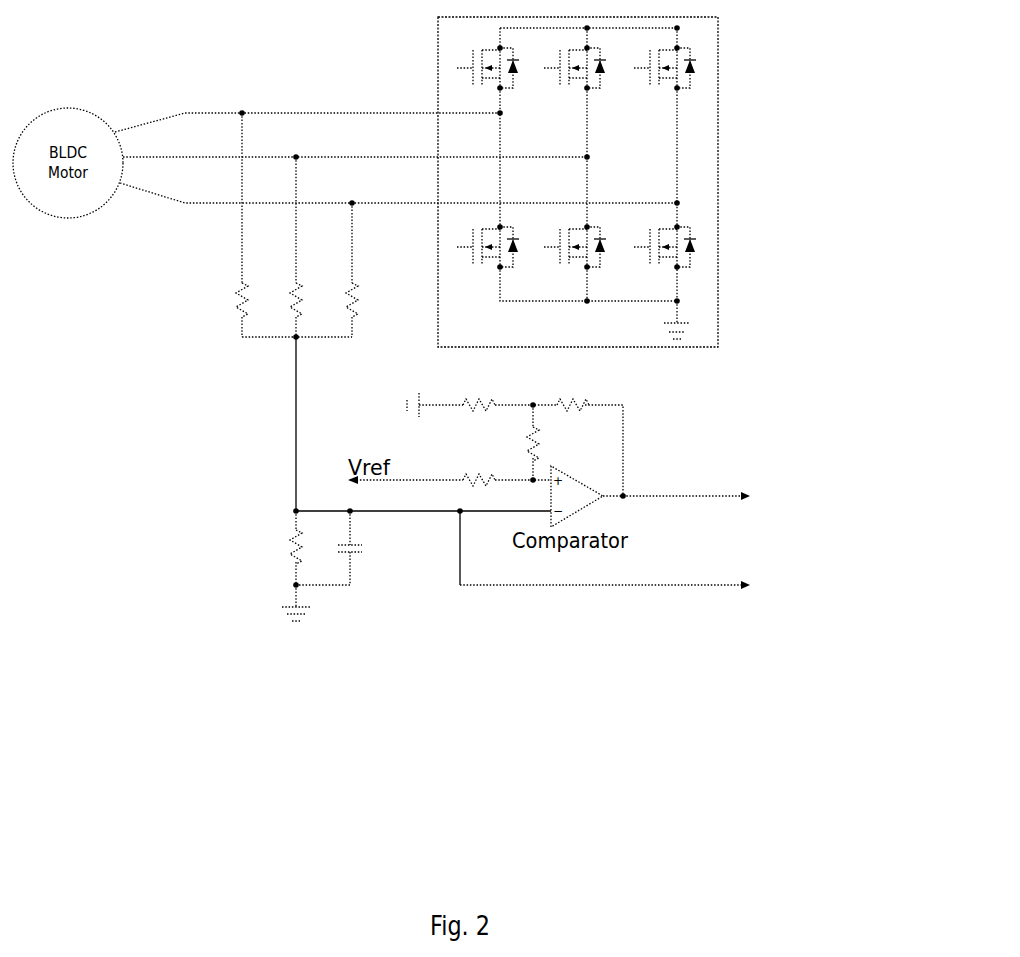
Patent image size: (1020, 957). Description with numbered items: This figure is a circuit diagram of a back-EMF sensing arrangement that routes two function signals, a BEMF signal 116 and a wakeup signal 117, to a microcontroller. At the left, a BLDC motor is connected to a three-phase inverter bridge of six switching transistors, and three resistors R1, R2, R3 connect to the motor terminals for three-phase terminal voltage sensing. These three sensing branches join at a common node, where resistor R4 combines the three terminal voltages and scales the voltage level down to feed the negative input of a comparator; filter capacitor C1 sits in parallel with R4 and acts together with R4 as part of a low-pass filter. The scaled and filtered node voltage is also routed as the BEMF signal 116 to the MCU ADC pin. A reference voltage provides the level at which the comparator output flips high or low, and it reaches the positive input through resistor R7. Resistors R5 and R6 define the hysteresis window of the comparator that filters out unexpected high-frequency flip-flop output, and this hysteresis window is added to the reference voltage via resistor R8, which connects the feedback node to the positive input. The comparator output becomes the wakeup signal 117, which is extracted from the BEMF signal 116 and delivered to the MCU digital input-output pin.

The back-electromotive-force (BEMF) signal 116 is at (661, 585).
The wakeup signal 117 is at (716, 495).
The resistor R1 is at (226, 300).
The resistor R2 is at (285, 300).
The resistor R3 is at (340, 300).
The resistor R4 is at (280, 547).
The resistor R5 is at (479, 394).
The resistor R6 is at (573, 385).
The resistor R7 is at (479, 469).
The resistor R8 is at (546, 444).
The filter capacitor C1 is at (366, 550).